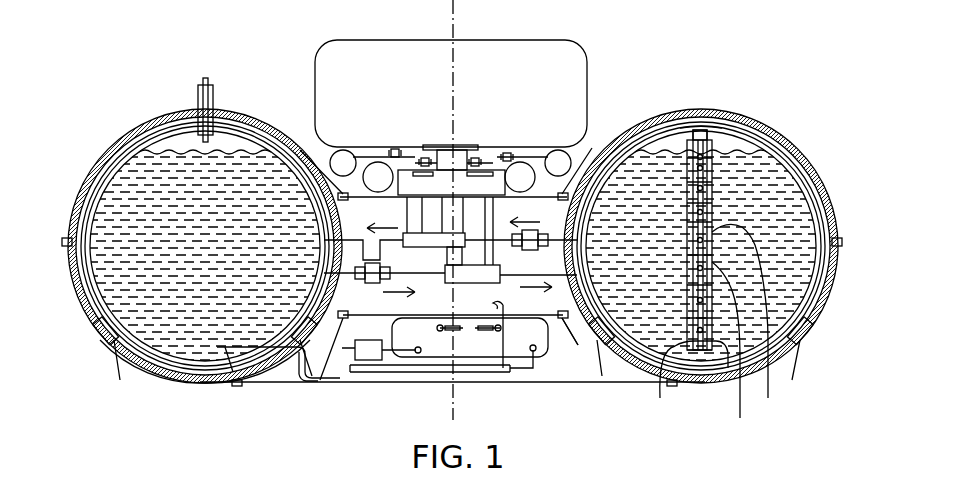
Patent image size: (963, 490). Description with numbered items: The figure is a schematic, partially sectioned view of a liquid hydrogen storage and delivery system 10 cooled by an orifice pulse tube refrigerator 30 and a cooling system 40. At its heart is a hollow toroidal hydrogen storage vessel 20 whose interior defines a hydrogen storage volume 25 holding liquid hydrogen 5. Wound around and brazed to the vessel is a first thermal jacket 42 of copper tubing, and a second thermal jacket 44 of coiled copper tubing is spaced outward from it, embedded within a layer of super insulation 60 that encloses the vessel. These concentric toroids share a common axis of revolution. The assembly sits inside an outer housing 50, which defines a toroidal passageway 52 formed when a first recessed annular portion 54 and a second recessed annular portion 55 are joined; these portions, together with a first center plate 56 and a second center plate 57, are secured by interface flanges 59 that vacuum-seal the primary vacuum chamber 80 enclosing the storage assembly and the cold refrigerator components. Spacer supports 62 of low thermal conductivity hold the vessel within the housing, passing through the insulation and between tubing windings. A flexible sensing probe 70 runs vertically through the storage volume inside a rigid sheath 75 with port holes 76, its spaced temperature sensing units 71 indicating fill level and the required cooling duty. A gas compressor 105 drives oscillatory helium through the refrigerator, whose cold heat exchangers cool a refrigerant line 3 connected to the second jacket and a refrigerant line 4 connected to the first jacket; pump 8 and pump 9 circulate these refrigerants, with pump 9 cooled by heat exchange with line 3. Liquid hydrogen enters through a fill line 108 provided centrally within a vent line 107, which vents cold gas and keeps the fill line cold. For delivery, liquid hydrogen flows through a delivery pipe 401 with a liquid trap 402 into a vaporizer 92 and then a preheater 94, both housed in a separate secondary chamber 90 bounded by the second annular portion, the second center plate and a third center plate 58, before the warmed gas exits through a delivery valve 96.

The liquid hydrogen storage and delivery system 10 is at (128, 68).
The liquid hydrogen storage vessel 20 is at (159, 129).
The hydrogen storage volume 25 is at (762, 186).
The liquid hydrogen 5 is at (189, 256).
The gas compressor 105 is at (376, 114).
The vent line 107 is at (198, 101).
The fill line 108 is at (205, 78).
The first recessed annular portion 54 is at (242, 118).
The outer housing 50 is at (750, 118).
The toroidal passageway 52 is at (128, 140).
The interface flange 59 is at (70, 238).
The first center plate 56 is at (358, 157).
The orifice pulse tube refrigerator 30 is at (595, 132).
The second thermal jacket 44 is at (705, 117).
The first thermal jacket 42 is at (725, 133).
The sensing probe 70 is at (719, 286).
The temperature sensing units 71 is at (662, 394).
The sheath 75 is at (711, 368).
The port holes 76 is at (746, 323).
The super insulation 60 is at (687, 384).
The cooling system 40 is at (107, 332).
The spacer supports 62 is at (578, 344).
The second recessed annular portion 55 is at (152, 370).
The third center plate 58 is at (271, 382).
The delivery pipe 401 is at (208, 378).
The liquid trap 402 is at (308, 378).
The refrigerant line 4 is at (457, 28).
The refrigerant line 3 is at (392, 244).
The pump 9 is at (366, 280).
The pump 8 is at (532, 249).
The secondary chamber 90 is at (384, 331).
The preheater 94 is at (440, 350).
The delivery valve 96 is at (370, 360).
The vaporizer 92 is at (402, 372).
The primary vacuum chamber 80 is at (503, 368).
The second center plate 57 is at (560, 344).